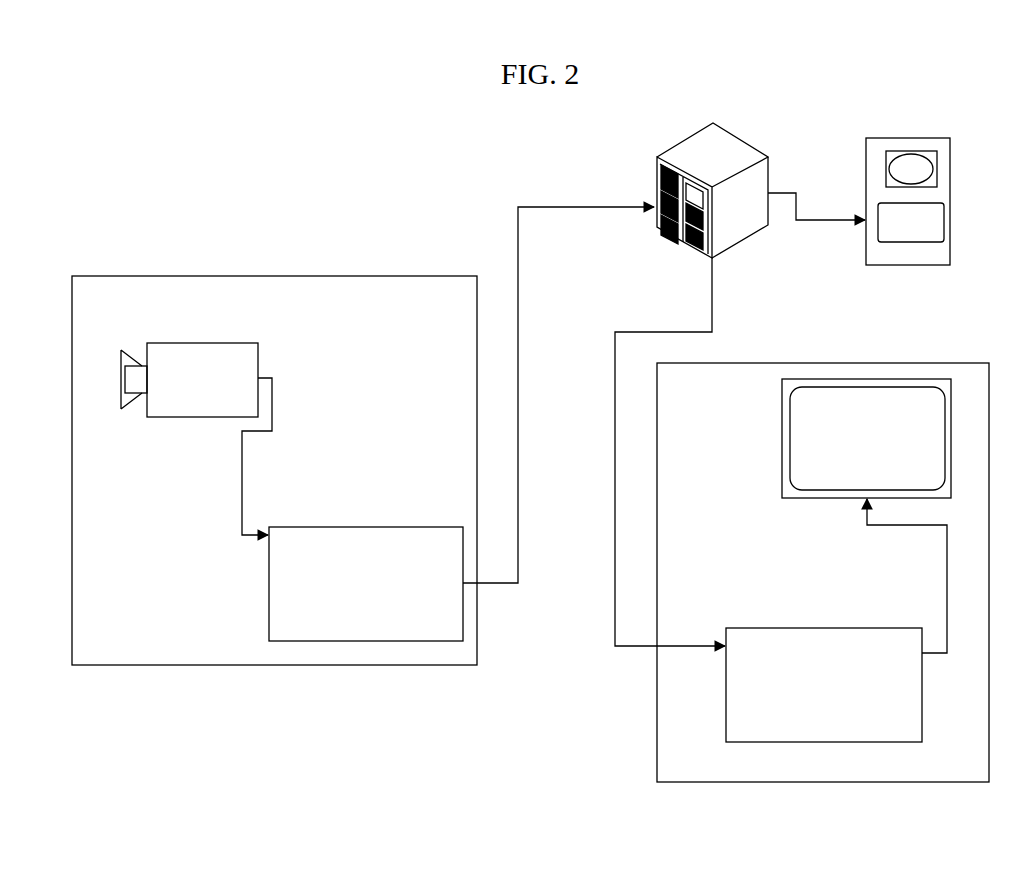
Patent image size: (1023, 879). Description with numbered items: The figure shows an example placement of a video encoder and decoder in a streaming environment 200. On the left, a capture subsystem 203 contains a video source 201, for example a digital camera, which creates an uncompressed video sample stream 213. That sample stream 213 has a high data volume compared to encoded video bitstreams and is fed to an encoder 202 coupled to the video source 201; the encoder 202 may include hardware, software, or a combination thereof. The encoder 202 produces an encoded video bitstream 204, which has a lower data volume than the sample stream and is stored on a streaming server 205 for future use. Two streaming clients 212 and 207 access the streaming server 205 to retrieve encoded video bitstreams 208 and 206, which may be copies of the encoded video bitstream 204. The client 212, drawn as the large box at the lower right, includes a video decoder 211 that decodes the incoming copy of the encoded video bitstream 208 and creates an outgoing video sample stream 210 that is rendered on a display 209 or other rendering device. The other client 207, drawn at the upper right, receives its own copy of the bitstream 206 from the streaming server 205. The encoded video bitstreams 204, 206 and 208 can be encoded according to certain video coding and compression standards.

The streaming environment 200 is at (104, 159).
The video source 201 is at (198, 343).
The encoder 202 is at (378, 527).
The capture subsystem 203 is at (262, 665).
The encoded video bitstream 204 is at (518, 233).
The streaming server 205 is at (657, 178).
The encoded video bitstream 206 is at (825, 223).
The streaming client 207 is at (950, 163).
The encoded video bitstream 208 is at (615, 498).
The display 209 is at (782, 428).
The outgoing video sample stream 210 is at (945, 590).
The video decoder 211 is at (726, 712).
The streaming client 212 is at (657, 725).
The uncompressed video sample stream 213 is at (241, 496).